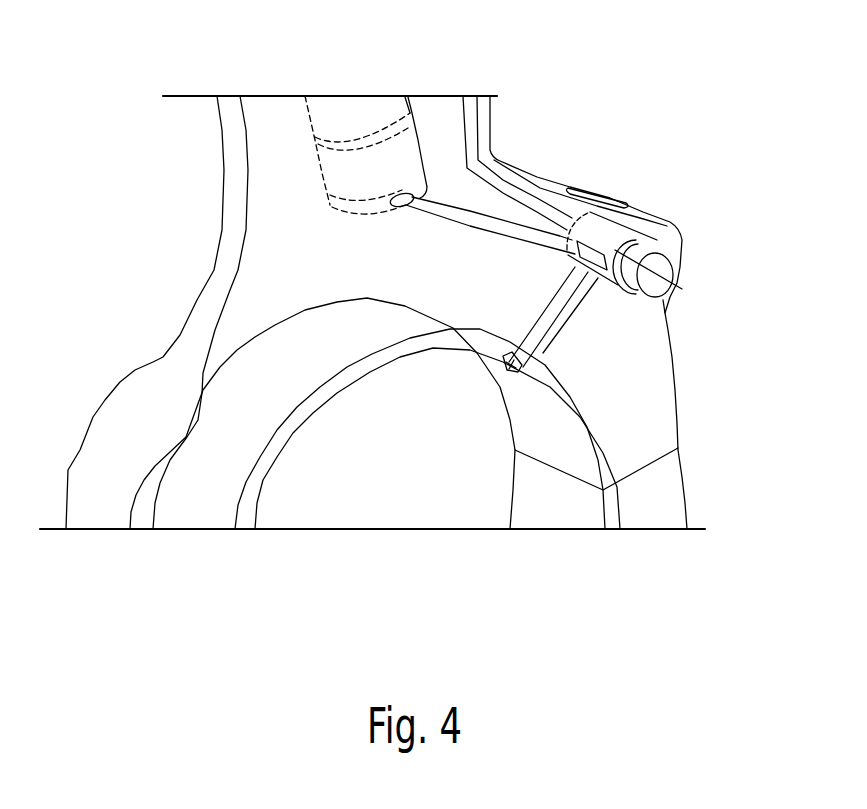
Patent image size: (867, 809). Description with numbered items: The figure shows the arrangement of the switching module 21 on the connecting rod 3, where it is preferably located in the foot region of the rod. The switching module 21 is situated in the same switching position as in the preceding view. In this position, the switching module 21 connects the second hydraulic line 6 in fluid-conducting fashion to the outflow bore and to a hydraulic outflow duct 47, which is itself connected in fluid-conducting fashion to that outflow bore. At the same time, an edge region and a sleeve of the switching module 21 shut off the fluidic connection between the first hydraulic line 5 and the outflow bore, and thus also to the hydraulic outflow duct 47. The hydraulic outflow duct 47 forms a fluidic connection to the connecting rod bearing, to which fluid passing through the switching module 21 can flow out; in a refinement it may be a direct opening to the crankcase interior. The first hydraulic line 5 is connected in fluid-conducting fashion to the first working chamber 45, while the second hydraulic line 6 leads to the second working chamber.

The connecting rod 3 is at (613, 122).
The first hydraulic line 5 is at (484, 174).
The second hydraulic line 6 is at (493, 227).
The switching module 21 is at (697, 219).
The first working chamber 45 is at (367, 181).
The hydraulic outflow duct 47 is at (533, 338).